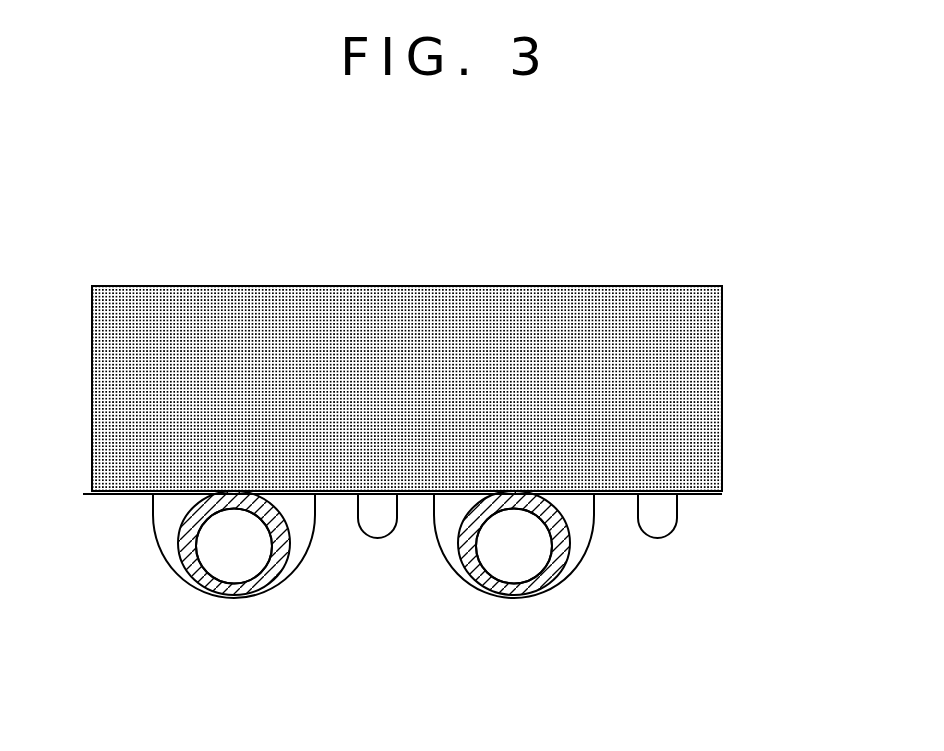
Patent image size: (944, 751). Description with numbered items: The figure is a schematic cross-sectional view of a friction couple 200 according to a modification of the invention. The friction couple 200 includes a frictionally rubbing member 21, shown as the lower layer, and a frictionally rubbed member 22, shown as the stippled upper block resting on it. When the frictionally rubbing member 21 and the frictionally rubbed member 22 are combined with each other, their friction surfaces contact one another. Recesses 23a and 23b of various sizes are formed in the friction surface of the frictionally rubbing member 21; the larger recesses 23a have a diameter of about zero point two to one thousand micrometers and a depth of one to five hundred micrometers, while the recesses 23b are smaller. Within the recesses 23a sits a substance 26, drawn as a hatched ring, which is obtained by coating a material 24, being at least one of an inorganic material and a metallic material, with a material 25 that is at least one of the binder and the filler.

The friction couple 200 is at (612, 255).
The frictionally rubbed member 22 is at (748, 286).
The frictionally rubbing member 21 is at (446, 598).
The recess 23a is at (305, 557).
The recess 23b is at (380, 538).
The material 24 is at (285, 650).
The material 25 is at (252, 585).
The substance 26 is at (234, 598).